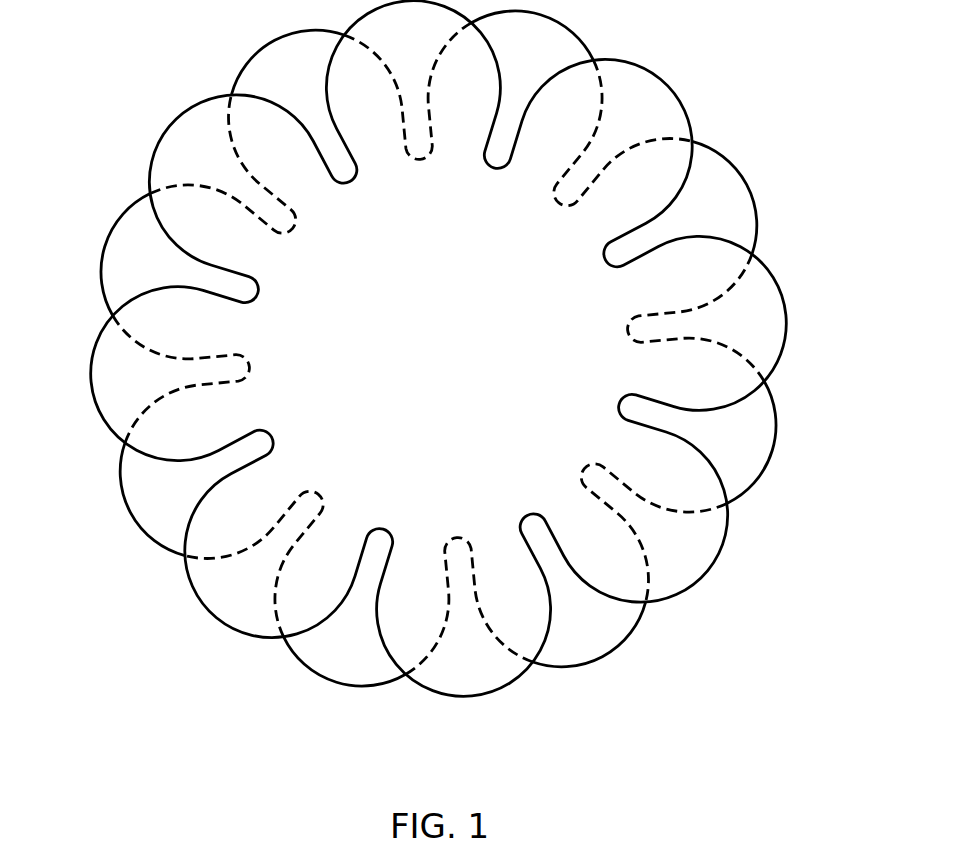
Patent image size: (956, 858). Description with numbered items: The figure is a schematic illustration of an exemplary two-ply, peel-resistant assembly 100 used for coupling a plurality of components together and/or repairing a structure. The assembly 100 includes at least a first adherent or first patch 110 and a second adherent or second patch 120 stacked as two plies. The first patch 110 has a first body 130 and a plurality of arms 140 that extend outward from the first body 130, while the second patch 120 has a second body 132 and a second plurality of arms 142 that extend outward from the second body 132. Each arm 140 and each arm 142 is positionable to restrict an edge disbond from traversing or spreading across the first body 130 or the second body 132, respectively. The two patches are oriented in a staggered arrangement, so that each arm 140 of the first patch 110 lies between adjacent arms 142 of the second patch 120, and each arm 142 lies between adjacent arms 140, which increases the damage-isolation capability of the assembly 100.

The peel-resistant assembly 100 is at (436, 349).
The first patch 110 is at (450, 348).
The second patch 120 is at (436, 349).
The first body 130 is at (375, 362).
The second body 132 is at (443, 423).
The arms 140 is at (717, 197).
The second plurality of arms 142 is at (650, 110).